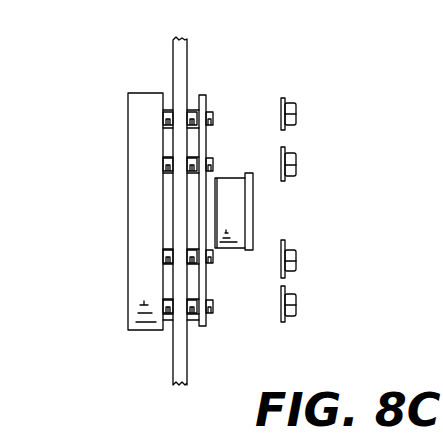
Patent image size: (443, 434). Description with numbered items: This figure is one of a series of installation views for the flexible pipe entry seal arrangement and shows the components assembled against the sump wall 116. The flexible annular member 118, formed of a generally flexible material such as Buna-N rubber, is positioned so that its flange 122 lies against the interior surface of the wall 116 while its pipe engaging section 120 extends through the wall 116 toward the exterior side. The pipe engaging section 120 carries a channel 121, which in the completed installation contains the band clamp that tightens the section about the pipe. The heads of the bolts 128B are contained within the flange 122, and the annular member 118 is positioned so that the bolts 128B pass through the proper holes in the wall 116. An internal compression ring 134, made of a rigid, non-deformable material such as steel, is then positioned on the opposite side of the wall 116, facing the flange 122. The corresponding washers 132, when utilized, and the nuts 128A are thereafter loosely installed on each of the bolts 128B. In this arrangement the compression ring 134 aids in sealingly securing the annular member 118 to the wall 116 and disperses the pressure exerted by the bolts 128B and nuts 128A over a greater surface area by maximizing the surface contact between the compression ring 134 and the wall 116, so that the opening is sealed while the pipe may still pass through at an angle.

The wall 116 is at (177, 353).
The flexible annular member 118 is at (113, 238).
The pipe engaging section 120 is at (215, 197).
The channel 121 is at (232, 228).
The flange 122 is at (148, 126).
The nuts 128A is at (323, 103).
The bolts 128B is at (212, 263).
The washers 132 is at (282, 116).
The internal compression ring 134 is at (205, 324).